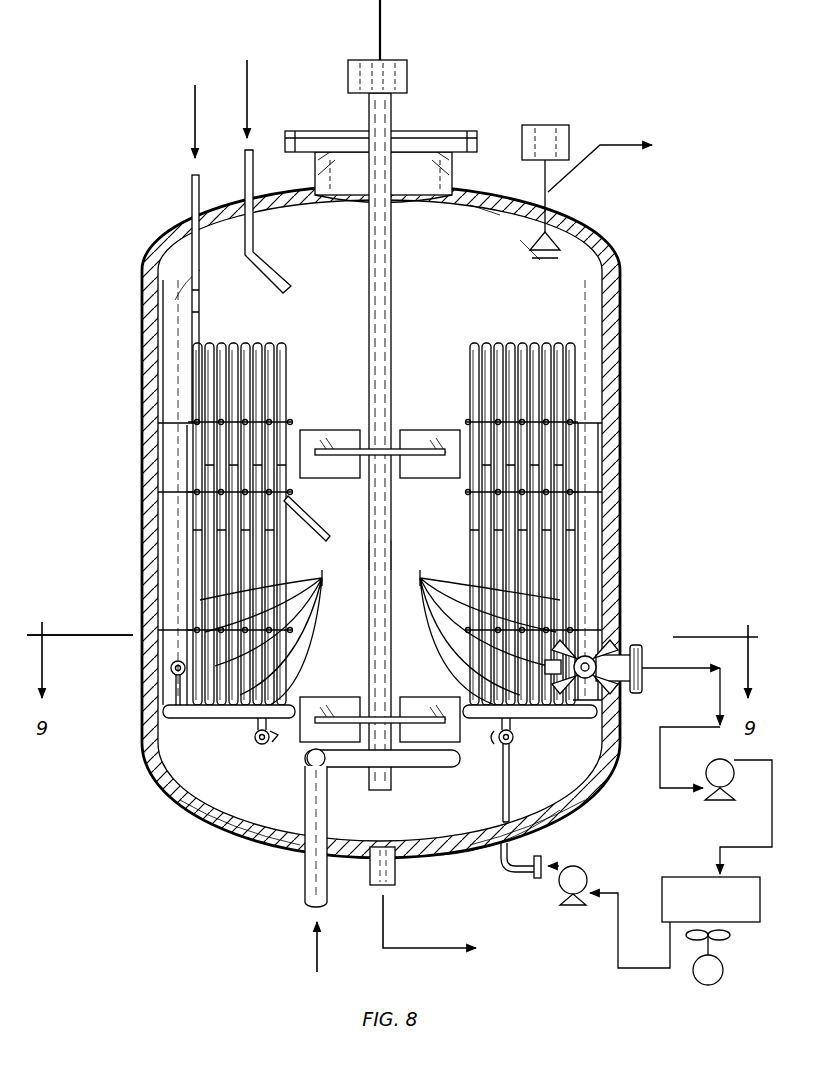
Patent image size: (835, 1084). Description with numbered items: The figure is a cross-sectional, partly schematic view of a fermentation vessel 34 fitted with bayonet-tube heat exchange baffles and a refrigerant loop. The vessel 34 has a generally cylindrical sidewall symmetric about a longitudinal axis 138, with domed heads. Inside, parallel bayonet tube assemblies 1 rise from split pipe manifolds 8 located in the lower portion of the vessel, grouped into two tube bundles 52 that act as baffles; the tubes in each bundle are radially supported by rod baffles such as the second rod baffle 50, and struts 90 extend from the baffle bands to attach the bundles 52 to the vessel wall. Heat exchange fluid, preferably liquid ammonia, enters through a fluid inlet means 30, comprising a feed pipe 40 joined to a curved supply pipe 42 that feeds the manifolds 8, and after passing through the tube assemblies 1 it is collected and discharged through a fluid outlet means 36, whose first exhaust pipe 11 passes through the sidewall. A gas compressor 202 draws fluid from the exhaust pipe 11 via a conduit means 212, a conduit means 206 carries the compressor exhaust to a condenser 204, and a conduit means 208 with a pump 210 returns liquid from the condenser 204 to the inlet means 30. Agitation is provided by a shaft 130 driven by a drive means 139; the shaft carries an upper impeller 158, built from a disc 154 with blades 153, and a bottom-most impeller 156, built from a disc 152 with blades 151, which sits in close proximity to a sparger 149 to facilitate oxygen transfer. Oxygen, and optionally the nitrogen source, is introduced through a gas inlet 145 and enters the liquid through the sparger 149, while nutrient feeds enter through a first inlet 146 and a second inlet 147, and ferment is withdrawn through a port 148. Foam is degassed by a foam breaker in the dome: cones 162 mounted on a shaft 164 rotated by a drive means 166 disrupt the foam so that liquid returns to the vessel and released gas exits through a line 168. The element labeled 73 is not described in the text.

The bayonet tube assembly 1 is at (380, 637).
The split pipe manifold 8 is at (283, 718).
The first exhaust pipe 11 is at (640, 690).
The fluid inlet means 30 is at (527, 768).
The vessel 34 is at (142, 395).
The fluid outlet means 36 is at (650, 645).
The feed pipe 40 is at (532, 880).
The curved supply pipe 42 is at (262, 745).
The second rod baffle 50 is at (393, 558).
The tube bundle 52 is at (296, 350).
The impeller 73 is at (606, 660).
The struts 90 is at (602, 420).
The shaft 130 is at (369, 260).
The longitudinal axis 138 is at (381, 25).
The drive means 139 is at (352, 68).
The gas inlet 145 is at (305, 885).
The first inlet 146 is at (245, 160).
The second inlet 147 is at (192, 210).
The port 148 is at (372, 885).
The sparger 149 is at (455, 770).
The blades 151 is at (440, 722).
The disc 152 is at (420, 725).
The blades 153 is at (445, 458).
The disc 154 is at (428, 432).
The impeller 156 is at (450, 715).
The impeller 158 is at (312, 430).
The cones 162 is at (530, 250).
The shaft 164 is at (545, 225).
The drive means 166 is at (535, 132).
The line 168 is at (612, 150).
The gas compressor 202 is at (712, 760).
The condenser 204 is at (766, 930).
The conduit means 206 is at (772, 800).
The conduit means 208 is at (604, 912).
The pump 210 is at (585, 868).
The conduit means 212 is at (718, 712).